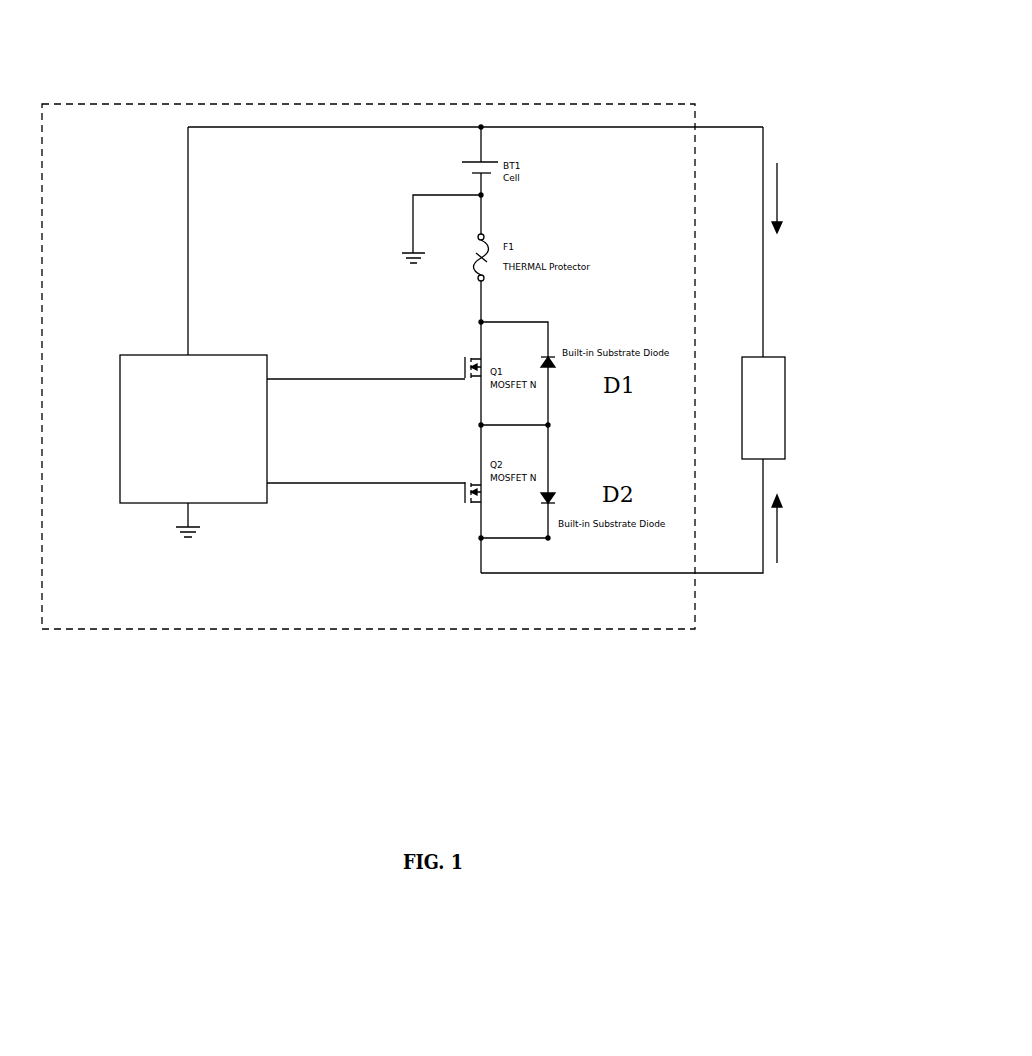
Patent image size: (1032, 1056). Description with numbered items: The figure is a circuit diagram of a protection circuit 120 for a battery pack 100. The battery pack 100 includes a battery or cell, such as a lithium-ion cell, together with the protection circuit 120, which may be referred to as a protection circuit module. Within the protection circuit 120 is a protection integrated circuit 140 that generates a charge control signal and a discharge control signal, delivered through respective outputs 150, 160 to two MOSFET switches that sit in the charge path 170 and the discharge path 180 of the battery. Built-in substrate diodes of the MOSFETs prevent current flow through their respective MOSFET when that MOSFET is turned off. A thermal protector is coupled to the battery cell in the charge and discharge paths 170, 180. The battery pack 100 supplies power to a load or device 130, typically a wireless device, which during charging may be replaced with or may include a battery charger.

The battery pack 100 is at (435, 597).
The protection circuit 120 is at (282, 146).
The load or device 130 is at (760, 390).
The protection integrated circuit 140 is at (145, 390).
The charge control output 150 is at (282, 370).
The discharge control output 160 is at (281, 492).
The charge path 170 is at (793, 528).
The discharge path 180 is at (795, 182).